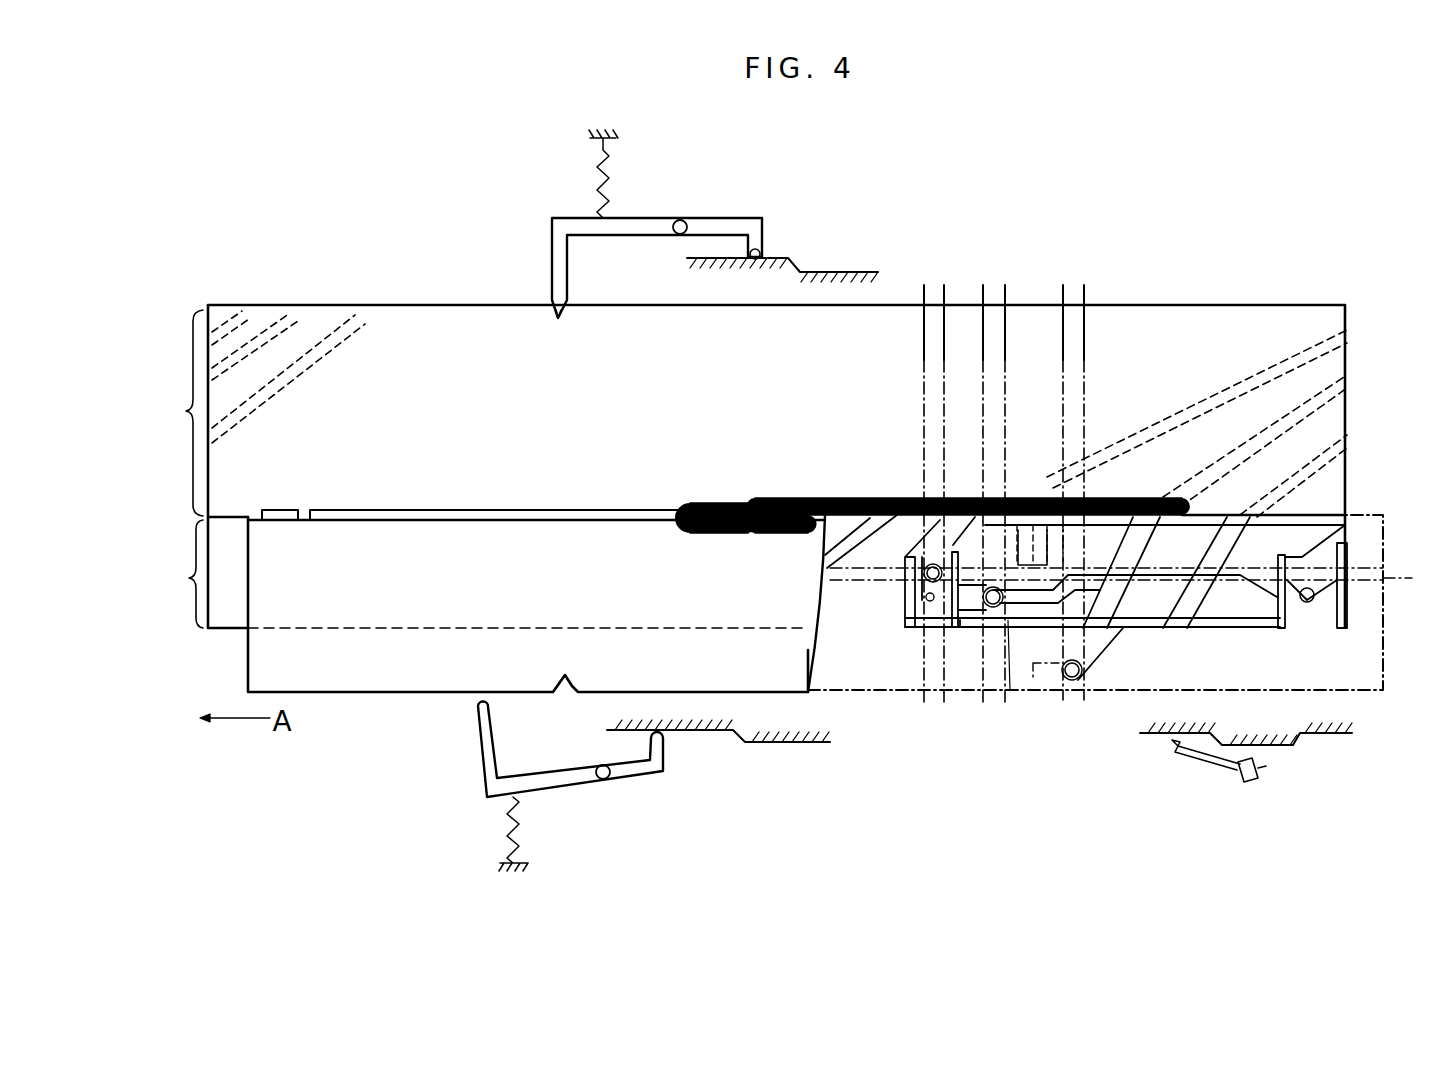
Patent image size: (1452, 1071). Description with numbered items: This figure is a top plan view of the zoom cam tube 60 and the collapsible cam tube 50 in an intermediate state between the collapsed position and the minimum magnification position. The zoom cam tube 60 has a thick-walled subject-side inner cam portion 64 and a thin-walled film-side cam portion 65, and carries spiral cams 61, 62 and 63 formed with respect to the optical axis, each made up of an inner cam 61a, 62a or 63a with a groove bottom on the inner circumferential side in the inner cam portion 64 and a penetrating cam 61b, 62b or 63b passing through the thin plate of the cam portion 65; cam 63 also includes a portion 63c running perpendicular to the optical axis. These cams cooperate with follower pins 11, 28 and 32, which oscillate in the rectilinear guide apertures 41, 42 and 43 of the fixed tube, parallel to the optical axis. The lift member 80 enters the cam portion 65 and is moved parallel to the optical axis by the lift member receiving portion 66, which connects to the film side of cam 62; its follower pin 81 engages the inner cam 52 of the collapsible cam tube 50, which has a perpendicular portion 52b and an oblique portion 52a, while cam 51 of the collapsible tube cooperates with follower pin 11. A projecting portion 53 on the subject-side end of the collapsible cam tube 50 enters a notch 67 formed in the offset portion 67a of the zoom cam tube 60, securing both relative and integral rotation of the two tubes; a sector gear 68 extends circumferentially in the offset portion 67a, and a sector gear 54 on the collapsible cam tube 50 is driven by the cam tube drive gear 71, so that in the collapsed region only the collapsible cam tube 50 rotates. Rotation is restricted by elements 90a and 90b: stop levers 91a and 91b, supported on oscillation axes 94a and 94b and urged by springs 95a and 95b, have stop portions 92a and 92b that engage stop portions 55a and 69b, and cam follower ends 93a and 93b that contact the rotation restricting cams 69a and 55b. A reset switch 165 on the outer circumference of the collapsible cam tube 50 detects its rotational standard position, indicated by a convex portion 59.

The zoom cam tube 60 is at (451, 298).
The collapsible cam tube 50 is at (338, 702).
The lift member receiving portion 66 is at (900, 642).
The inner cam 62a is at (249, 316).
The inner cam 63a is at (301, 318).
The inner cam 61a is at (361, 320).
The cam 62 is at (1272, 358).
The cam 63 is at (1186, 476).
The cam 61 is at (1272, 477).
The inner cam portion 64 is at (174, 413).
The cam portion 65 is at (177, 574).
The offset portion 67a is at (229, 519).
The projecting portion 53 is at (306, 511).
The notch 67 is at (500, 476).
The cam tube drive gear 71 is at (712, 502).
The sector gear 68 is at (775, 497).
The sector gear 54 is at (762, 534).
The rectilinear guide aperture 42 is at (945, 292).
The rectilinear guide aperture 43 is at (1005, 297).
The rectilinear guide aperture 41 is at (1085, 297).
The cam tube rotation restriction mechanism element 90b is at (565, 206).
The cam follower end 93b is at (762, 255).
The oscillation axis 94b is at (682, 221).
The stop lever 91b is at (660, 232).
The stop portion 92b is at (553, 288).
The stop portion 69b is at (566, 304).
The spring 95b is at (598, 149).
The rotation restricting cam 55b is at (800, 263).
The cam tube rotation restriction mechanism element 90a is at (566, 800).
The oscillation axis 94a is at (606, 779).
The cam follower end 93a is at (660, 748).
The stop lever 91a is at (645, 770).
The stop portion 92a is at (478, 708).
The spring 95a is at (510, 824).
The rotation restricting cam 69a is at (740, 736).
The stop portion 55a is at (563, 699).
The convex portion 59 is at (1283, 748).
The reset switch 165 is at (1245, 785).
The inner cam 52 is at (1140, 577).
The follower pin 81 is at (934, 632).
The lift member 80 is at (948, 636).
The perpendicular portion 52b is at (1047, 497).
The penetrating cam 62b is at (930, 560).
The follower pin 28 is at (900, 497).
The penetrating cam 63b is at (1118, 499).
The penetrating cam 61b is at (1203, 548).
The perpendicular portion of cam 63c is at (1016, 645).
The follower pin 11 is at (1073, 681).
The cam 51 is at (1117, 647).
The follower pin 32 is at (1010, 690).
The oblique portion 52a is at (905, 590).